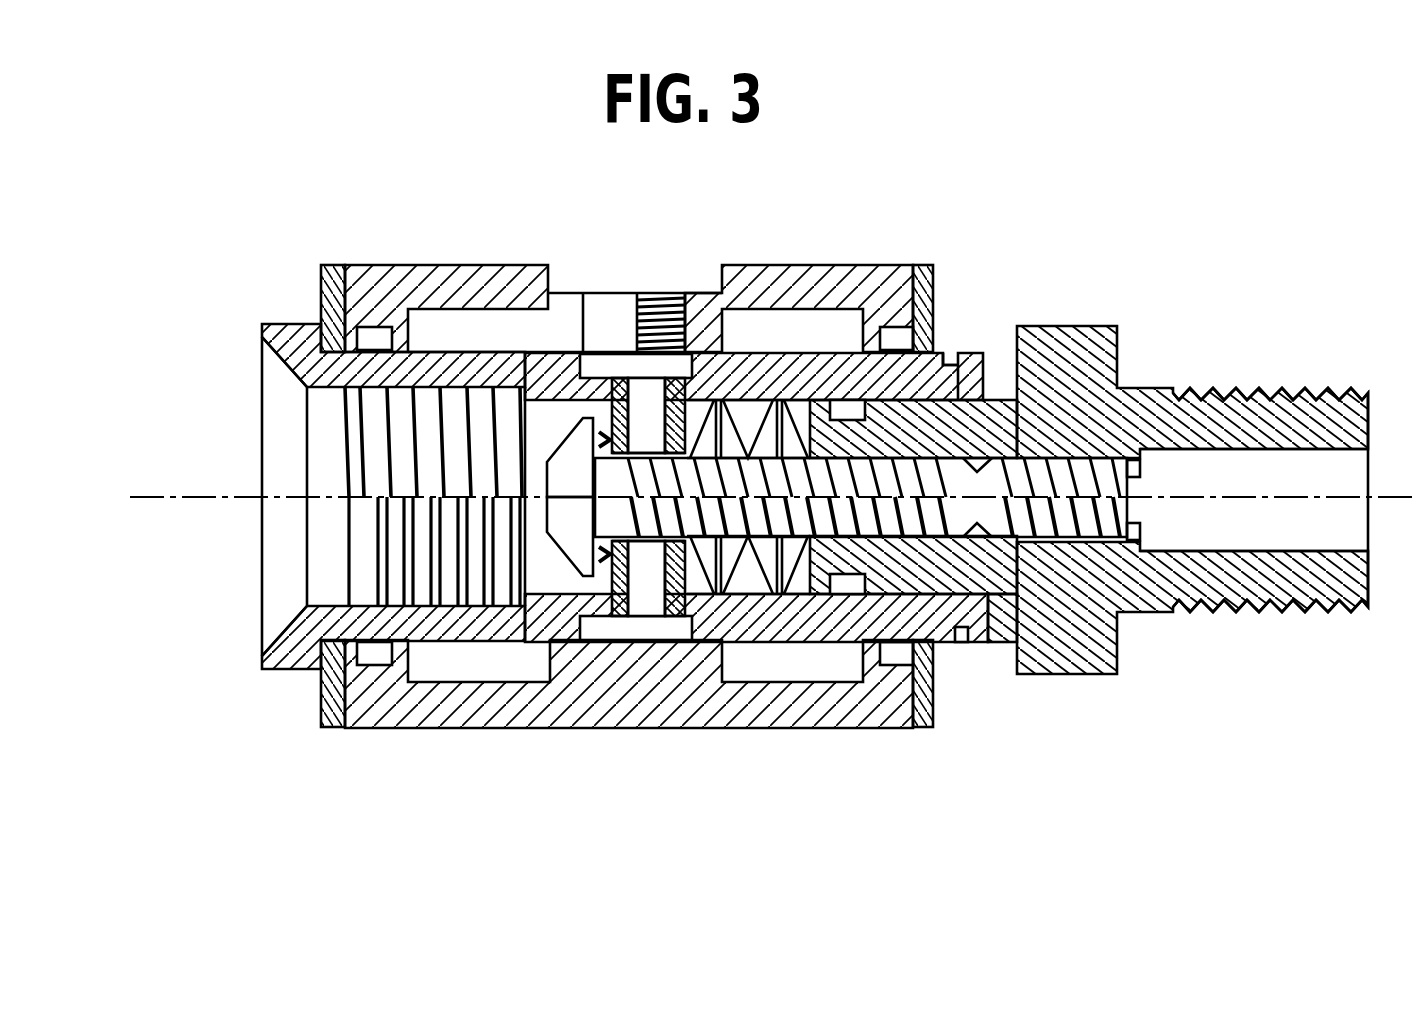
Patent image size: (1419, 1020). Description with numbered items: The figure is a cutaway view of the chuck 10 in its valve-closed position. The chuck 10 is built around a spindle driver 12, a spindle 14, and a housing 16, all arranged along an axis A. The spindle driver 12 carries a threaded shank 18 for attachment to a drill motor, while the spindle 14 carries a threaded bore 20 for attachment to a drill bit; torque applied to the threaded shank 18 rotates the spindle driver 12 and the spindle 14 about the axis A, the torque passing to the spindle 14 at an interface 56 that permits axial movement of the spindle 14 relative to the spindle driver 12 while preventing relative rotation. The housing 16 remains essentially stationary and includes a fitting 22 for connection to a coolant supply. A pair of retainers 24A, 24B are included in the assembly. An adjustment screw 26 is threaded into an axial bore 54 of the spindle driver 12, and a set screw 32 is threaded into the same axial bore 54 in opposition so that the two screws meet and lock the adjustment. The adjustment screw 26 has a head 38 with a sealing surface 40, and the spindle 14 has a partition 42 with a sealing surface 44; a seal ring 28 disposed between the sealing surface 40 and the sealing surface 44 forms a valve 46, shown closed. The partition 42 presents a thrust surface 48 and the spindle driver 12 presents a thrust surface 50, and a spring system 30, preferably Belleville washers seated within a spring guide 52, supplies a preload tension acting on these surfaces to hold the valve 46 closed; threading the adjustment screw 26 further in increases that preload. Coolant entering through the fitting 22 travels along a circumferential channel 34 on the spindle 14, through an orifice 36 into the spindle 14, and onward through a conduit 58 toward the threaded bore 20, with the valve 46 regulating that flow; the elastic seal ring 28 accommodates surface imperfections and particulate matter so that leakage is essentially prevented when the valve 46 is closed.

The chuck 10 is at (879, 146).
The axis A is at (142, 486).
The spindle driver 12 is at (1066, 322).
The spindle 14 is at (262, 318).
The housing 16 is at (428, 730).
The threaded shank 18 is at (1324, 387).
The threaded bore 20 is at (292, 413).
The fitting 22 is at (668, 368).
The retainer 24A is at (344, 262).
The retainer 24B is at (926, 262).
The adjustment screw 26 is at (995, 582).
The seal ring 28 is at (566, 566).
The spring system 30 is at (796, 562).
The set screw 32 is at (1140, 474).
The channel 34 is at (618, 354).
The orifice 36 is at (648, 405).
The head 38 is at (636, 322).
The sealing surface 40 is at (605, 483).
The partition 42 is at (614, 420).
The sealing surface 44 is at (578, 440).
The valve 46 is at (657, 572).
The thrust surface 48 is at (732, 416).
The thrust surface 50 is at (792, 430).
The spring guide 52 is at (760, 602).
The axial bore 54 is at (930, 472).
The interface 56 is at (936, 602).
The conduit 58 is at (520, 598).